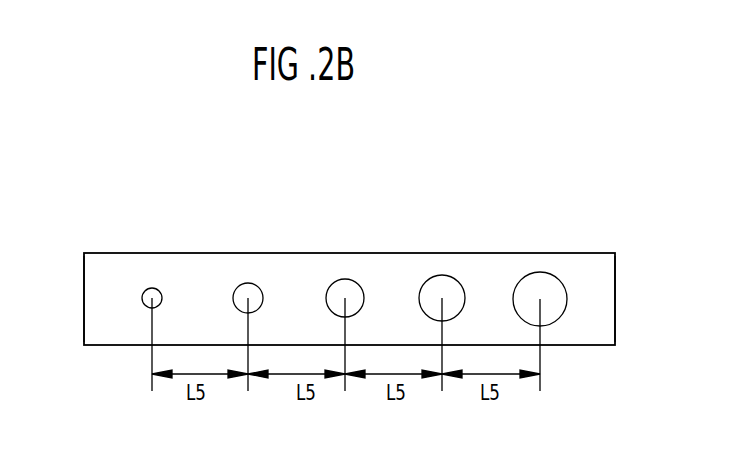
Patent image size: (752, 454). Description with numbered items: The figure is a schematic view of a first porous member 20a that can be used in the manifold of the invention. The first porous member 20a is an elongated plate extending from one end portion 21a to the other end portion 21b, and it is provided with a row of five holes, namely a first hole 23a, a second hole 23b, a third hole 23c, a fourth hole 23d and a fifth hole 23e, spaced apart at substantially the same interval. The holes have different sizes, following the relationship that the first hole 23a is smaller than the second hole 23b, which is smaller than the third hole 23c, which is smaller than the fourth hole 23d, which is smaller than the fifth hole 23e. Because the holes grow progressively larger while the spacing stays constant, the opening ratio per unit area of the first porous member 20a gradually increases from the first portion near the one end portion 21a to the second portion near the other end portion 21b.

The first porous member 20a is at (122, 164).
The one end portion 21a is at (84, 283).
The other end portion 21b is at (615, 282).
The first hole 23a is at (153, 289).
The second hole 23b is at (253, 289).
The third hole 23c is at (349, 286).
The fourth hole 23d is at (443, 286).
The fifth hole 23e is at (536, 286).